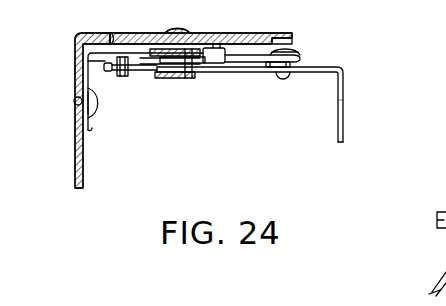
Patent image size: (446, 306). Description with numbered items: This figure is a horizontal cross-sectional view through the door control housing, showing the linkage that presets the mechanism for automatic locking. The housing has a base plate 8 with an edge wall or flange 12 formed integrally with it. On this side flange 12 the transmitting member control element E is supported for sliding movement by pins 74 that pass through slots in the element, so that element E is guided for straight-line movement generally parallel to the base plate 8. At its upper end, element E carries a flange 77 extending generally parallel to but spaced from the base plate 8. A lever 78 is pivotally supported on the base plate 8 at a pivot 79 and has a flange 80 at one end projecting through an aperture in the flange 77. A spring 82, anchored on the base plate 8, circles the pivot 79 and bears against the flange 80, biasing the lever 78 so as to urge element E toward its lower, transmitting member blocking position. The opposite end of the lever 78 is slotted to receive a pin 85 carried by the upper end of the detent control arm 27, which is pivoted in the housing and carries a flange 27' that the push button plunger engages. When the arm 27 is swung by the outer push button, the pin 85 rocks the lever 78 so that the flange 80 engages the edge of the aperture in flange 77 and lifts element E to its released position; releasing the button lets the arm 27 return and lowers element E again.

The edge wall or flange 12 is at (75, 136).
The flange 77 is at (104, 33).
The base plate 8 is at (292, 33).
The transmitting member control element E is at (90, 131).
The pins 74 is at (74, 101).
The flange 80 is at (129, 77).
The pivot 79 is at (182, 78).
The lever 78 is at (213, 47).
The pin 85 is at (296, 53).
The spring 82 is at (222, 76).
The detent control arm 27 is at (250, 104).
The flange 27' is at (364, 107).